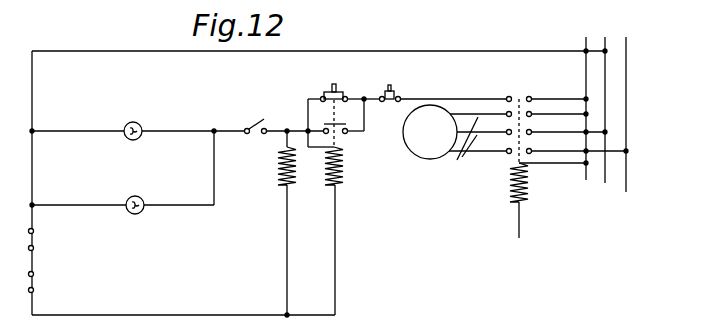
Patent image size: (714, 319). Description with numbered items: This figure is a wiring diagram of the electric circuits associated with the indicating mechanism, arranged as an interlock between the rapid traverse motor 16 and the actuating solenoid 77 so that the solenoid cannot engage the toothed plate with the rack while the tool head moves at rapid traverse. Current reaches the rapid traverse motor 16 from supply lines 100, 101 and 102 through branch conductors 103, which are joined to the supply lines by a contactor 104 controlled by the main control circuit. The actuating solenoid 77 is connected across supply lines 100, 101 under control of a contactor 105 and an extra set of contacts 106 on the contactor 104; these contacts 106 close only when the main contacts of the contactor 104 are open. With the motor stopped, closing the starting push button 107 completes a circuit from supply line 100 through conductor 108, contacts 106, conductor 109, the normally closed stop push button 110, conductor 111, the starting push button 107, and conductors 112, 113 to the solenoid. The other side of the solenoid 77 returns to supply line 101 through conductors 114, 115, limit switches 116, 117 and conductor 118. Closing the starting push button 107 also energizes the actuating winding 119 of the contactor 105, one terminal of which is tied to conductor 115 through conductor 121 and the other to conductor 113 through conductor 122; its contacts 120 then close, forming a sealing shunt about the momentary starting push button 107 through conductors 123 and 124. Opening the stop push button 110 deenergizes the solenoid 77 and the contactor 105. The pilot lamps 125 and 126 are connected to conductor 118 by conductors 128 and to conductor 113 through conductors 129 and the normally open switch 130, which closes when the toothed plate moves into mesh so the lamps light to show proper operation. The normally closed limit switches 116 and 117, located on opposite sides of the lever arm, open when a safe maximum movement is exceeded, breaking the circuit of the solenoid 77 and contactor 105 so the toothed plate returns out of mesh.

The rapid traverse motor 16 is at (413, 153).
The actuating solenoid 77 is at (279, 185).
The supply line 100 is at (586, 40).
The supply line 101 is at (605, 40).
The supply line 102 is at (626, 45).
The branch conductors 103 is at (461, 160).
The contactor 104 is at (504, 171).
The contactor 105 is at (346, 186).
The extra set of contacts 106 is at (518, 96).
The starting push button 107 is at (331, 88).
The conductor 108 is at (552, 98).
The conductor 109 is at (468, 98).
The stop push button 110 is at (400, 89).
The conductor 111 is at (382, 97).
The conductor 112 is at (320, 98).
The conductor 113 is at (282, 138).
The conductor 114 is at (279, 240).
The conductor 115 is at (153, 315).
The limit switch 116 is at (36, 275).
The limit switch 117 is at (36, 232).
The conductor 118 is at (112, 51).
The actuating winding 119 is at (343, 158).
The contacts 120 is at (348, 128).
The conductor 121 is at (343, 278).
The conductor 122 is at (290, 126).
The conductor 123 is at (320, 124).
The conductor 124 is at (348, 134).
The indicating lamp 125 is at (137, 122).
The indicating lamp 126 is at (141, 196).
The conductors 128 is at (79, 130).
The conductors 129 is at (191, 130).
The switch 130 is at (256, 127).